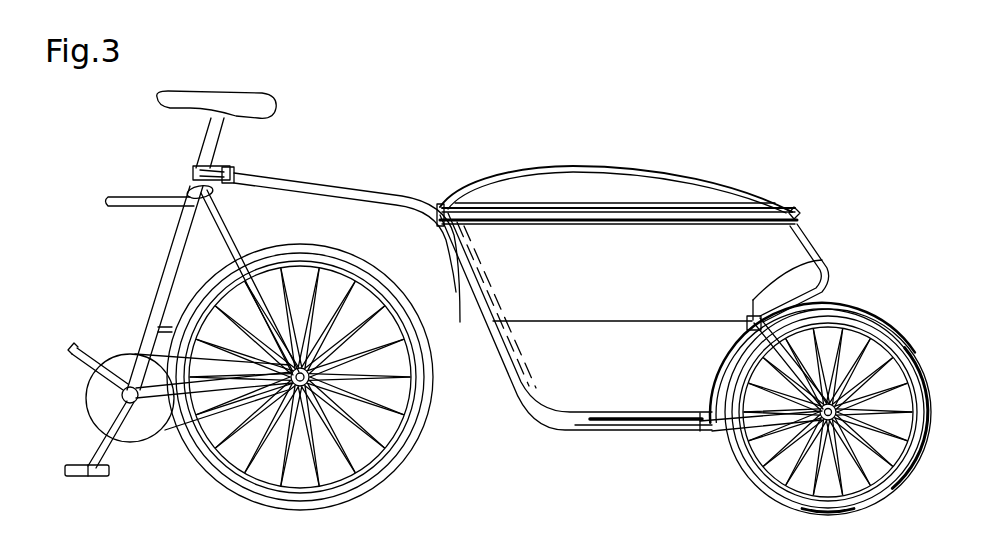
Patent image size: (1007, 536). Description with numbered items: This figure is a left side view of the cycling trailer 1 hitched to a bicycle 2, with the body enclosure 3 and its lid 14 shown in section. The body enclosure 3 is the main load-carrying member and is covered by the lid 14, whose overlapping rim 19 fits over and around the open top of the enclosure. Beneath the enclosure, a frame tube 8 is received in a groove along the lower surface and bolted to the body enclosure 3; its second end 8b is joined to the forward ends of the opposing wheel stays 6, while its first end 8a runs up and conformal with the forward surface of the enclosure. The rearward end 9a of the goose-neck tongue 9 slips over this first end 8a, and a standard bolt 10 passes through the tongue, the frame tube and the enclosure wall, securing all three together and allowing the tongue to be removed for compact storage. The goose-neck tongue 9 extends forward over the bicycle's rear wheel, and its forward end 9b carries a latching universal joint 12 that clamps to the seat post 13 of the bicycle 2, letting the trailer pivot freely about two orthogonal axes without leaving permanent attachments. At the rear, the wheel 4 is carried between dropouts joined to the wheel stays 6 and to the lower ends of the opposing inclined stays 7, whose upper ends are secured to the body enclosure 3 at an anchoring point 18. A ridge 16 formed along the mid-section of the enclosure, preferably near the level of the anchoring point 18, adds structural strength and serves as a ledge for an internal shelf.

The cycling trailer 1 is at (700, 140).
The bicycle 2 is at (148, 172).
The body enclosure 3 is at (618, 282).
The wheel 4 is at (908, 358).
The opposing wheel stays 6 is at (733, 432).
The opposing inclined stays 7 is at (815, 305).
The frame tube 8 is at (614, 429).
The first end of the frame tube 8a is at (510, 380).
The second end of the frame tube 8b is at (697, 433).
The goose-neck tongue 9 is at (374, 192).
The rearward end of the goose-neck tongue 9a is at (500, 366).
The forward end of the goose-neck tongue 9b is at (232, 187).
The standard bolt 10 is at (498, 363).
The latching universal joint 12 is at (232, 160).
The seat post 13 is at (213, 142).
The lid 14 is at (612, 182).
The ridge 16 is at (677, 321).
The anchoring point 18 is at (820, 258).
The overlapping rim 19 is at (800, 212).